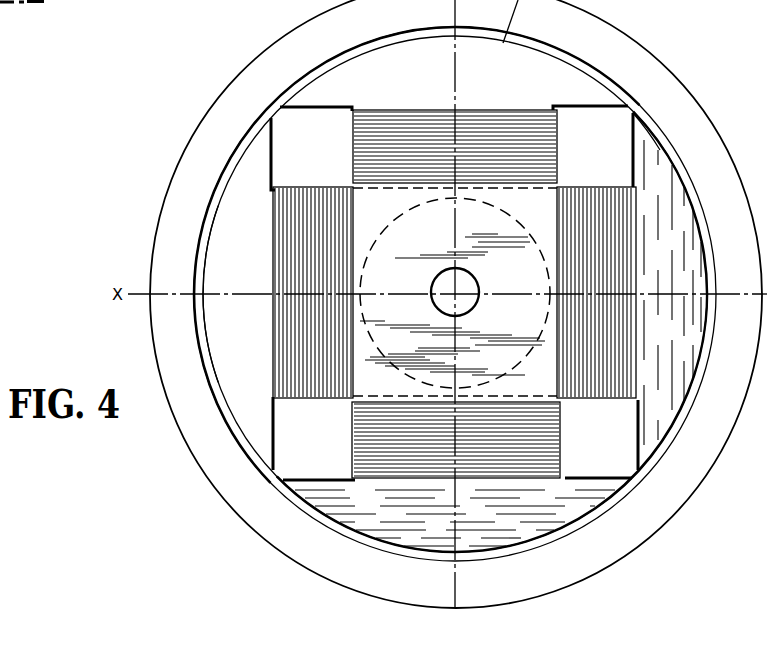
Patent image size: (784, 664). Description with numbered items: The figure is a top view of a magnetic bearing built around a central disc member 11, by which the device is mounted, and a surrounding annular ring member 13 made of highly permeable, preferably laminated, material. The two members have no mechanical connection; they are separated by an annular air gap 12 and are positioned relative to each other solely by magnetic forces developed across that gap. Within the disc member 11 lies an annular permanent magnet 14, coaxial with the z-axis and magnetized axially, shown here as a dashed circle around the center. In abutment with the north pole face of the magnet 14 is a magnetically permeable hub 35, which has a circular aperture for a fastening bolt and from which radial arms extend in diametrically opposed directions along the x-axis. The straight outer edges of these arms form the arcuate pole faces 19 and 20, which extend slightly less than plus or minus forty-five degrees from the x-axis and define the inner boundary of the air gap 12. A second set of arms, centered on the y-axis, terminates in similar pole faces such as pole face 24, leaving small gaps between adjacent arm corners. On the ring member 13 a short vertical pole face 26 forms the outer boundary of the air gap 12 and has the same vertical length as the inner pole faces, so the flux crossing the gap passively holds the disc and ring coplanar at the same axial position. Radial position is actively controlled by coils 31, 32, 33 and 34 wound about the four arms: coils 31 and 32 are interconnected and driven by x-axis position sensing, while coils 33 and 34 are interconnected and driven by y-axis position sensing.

The disc member 11 is at (414, 72).
The annular air gap 12 is at (273, 104).
The annular ring member 13 is at (617, 33).
The annular permanent magnet 14 is at (515, 230).
The pole face 19 is at (208, 232).
The pole face 20 is at (695, 210).
The pole face 24 is at (572, 520).
The pole face 26 is at (678, 158).
The coil 31 is at (278, 243).
The coil 32 is at (626, 272).
The coil 33 is at (437, 462).
The coil 34 is at (468, 110).
The hub 35 is at (437, 243).